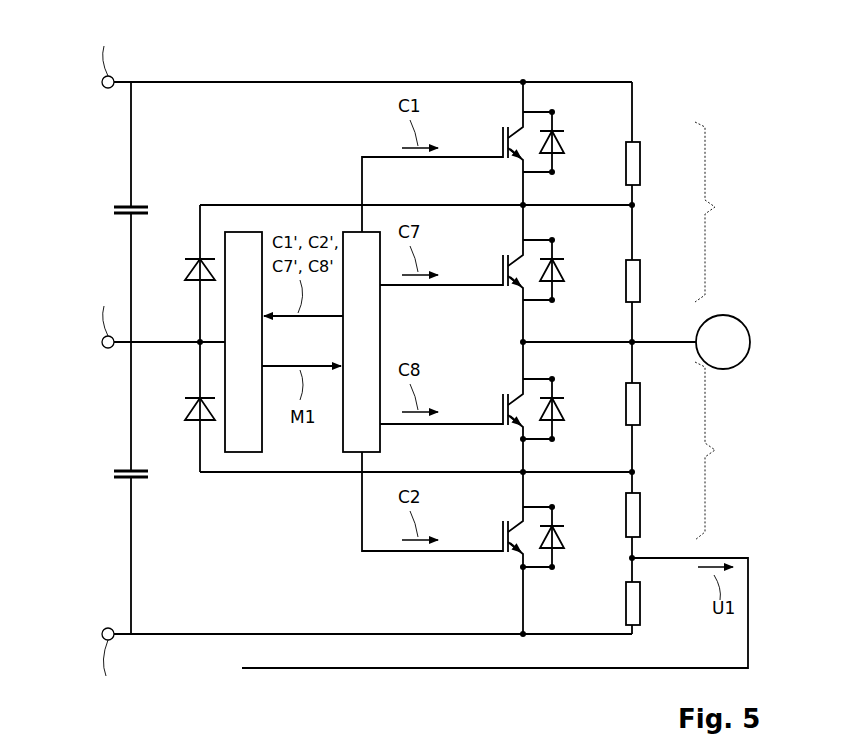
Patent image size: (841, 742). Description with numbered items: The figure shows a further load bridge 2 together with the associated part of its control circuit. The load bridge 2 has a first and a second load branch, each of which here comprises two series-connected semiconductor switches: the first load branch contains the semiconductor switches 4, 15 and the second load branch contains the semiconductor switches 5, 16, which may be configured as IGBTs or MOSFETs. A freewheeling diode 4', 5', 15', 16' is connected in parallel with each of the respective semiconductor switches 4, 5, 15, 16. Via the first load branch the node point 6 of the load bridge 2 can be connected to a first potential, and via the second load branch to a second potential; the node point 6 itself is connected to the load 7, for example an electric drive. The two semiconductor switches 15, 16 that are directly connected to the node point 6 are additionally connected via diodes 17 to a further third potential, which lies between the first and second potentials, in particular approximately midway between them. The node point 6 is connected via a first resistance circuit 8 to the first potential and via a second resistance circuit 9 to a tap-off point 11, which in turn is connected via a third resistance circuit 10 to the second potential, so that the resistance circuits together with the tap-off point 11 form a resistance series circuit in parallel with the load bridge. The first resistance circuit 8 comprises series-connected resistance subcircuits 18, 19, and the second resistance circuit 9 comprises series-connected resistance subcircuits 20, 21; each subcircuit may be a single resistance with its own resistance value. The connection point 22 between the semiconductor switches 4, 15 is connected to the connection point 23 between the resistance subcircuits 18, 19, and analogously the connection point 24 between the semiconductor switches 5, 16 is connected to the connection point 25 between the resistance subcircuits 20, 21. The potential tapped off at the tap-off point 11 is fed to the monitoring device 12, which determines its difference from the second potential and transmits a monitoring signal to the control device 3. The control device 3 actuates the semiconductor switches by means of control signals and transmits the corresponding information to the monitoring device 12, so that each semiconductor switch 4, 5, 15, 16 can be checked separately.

The load bridge 2 is at (614, 63).
The control device 3 is at (343, 437).
The first semiconductor switch 4 is at (442, 157).
The freewheeling diode 4' is at (566, 142).
The second semiconductor switch 5 is at (442, 543).
The freewheeling diode 5' is at (564, 537).
The node point 6 is at (526, 341).
The load 7 is at (722, 314).
The first resistance circuit 8 is at (683, 212).
The second resistance circuit 9 is at (683, 488).
The third resistance circuit 10 is at (641, 592).
The tap-off point 11 is at (630, 560).
The monitoring device 12 is at (240, 232).
The semiconductor switch 15 is at (451, 273).
The freewheeling diode 15' is at (570, 270).
The semiconductor switch 16 is at (451, 407).
The freewheeling diode 16' is at (568, 409).
The diode 17 is at (188, 270).
The resistance subcircuit 18 is at (641, 153).
The resistance subcircuit 19 is at (641, 270).
The resistance subcircuit 20 is at (641, 392).
The resistance subcircuit 21 is at (641, 506).
The connection point 22 is at (526, 203).
The connection point 23 is at (635, 205).
The connection point 24 is at (521, 471).
The connection point 25 is at (635, 472).